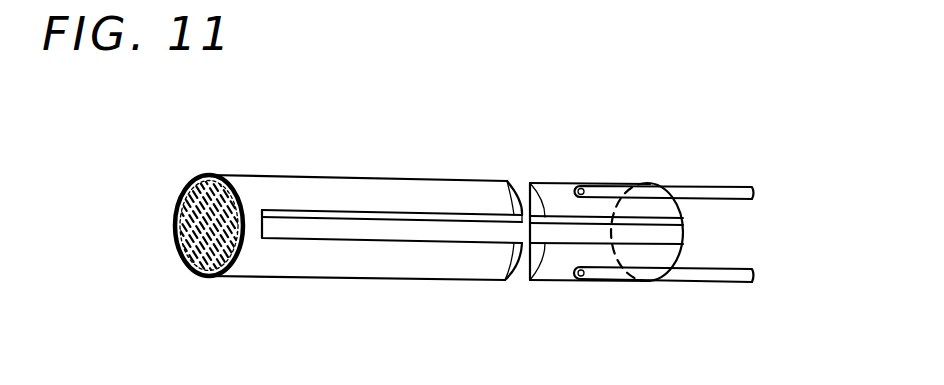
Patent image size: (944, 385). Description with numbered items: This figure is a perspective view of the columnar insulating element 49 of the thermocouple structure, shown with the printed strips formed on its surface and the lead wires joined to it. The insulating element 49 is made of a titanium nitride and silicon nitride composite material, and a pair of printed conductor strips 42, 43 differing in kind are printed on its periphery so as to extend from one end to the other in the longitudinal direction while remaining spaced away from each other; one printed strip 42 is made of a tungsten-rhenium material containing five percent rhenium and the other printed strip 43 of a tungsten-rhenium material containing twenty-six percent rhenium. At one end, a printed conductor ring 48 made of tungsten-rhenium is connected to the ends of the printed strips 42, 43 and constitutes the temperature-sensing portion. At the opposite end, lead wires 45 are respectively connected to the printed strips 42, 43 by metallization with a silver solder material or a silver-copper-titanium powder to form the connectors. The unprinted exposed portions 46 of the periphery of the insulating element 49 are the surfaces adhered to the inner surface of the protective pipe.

The printed conductor strip 42 is at (392, 194).
The printed conductor strip 43 is at (446, 264).
The lead wires 45 is at (713, 190).
The exposed portions 46 is at (354, 237).
The printed conductor ring 48 is at (207, 175).
The columnar insulating element 49 is at (193, 236).